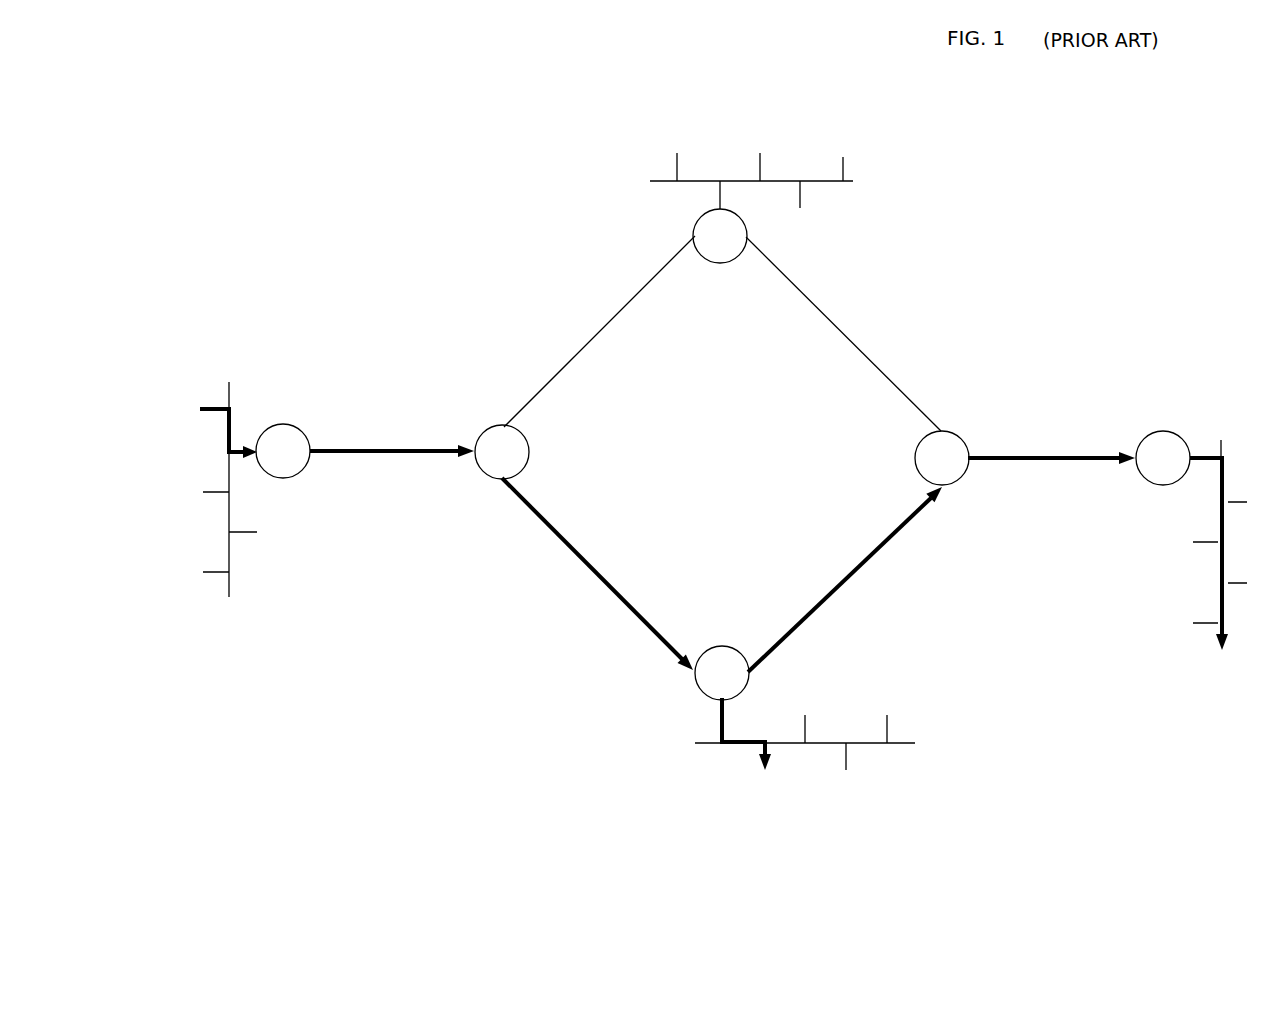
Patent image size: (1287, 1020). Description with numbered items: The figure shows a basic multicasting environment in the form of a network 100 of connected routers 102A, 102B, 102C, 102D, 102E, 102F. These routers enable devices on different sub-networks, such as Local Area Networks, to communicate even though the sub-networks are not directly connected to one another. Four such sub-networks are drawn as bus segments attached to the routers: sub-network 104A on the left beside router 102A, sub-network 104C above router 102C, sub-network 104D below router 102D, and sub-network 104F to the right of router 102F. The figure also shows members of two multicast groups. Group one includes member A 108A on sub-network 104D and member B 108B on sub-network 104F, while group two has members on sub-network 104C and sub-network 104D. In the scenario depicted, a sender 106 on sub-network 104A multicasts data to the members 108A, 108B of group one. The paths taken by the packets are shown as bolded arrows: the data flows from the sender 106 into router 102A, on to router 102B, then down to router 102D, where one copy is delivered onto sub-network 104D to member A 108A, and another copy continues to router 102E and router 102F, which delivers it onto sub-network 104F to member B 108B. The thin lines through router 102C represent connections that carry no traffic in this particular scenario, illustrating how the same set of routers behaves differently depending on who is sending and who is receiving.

The network 100 is at (998, 239).
The router 102A is at (303, 428).
The router 102B is at (529, 446).
The router 102C is at (725, 263).
The router 102D is at (727, 647).
The router 102E is at (952, 432).
The router 102F is at (1148, 435).
The sub-network 104A is at (229, 597).
The sub-network 104C is at (858, 183).
The sub-network 104D is at (905, 744).
The sub-network 104F is at (1223, 440).
The sender S1 106 is at (183, 398).
The member A of Group 1 108A is at (741, 840).
The member B of Group 1 108B is at (1178, 707).